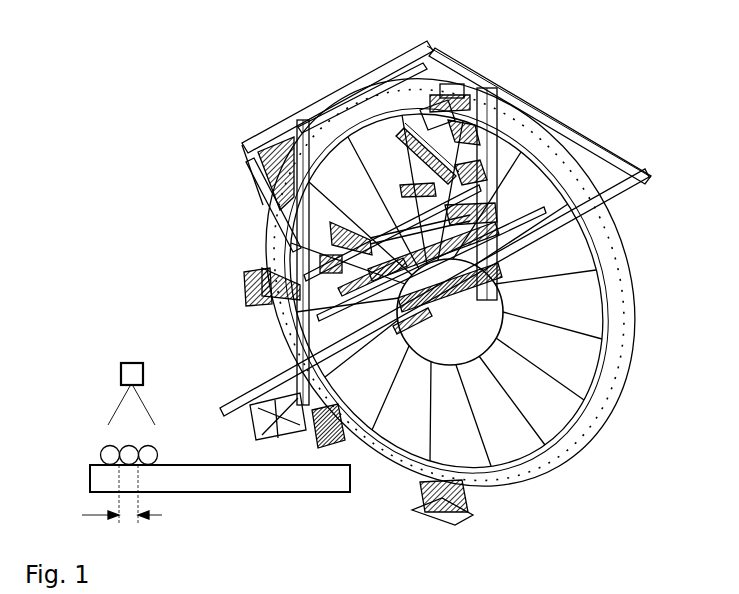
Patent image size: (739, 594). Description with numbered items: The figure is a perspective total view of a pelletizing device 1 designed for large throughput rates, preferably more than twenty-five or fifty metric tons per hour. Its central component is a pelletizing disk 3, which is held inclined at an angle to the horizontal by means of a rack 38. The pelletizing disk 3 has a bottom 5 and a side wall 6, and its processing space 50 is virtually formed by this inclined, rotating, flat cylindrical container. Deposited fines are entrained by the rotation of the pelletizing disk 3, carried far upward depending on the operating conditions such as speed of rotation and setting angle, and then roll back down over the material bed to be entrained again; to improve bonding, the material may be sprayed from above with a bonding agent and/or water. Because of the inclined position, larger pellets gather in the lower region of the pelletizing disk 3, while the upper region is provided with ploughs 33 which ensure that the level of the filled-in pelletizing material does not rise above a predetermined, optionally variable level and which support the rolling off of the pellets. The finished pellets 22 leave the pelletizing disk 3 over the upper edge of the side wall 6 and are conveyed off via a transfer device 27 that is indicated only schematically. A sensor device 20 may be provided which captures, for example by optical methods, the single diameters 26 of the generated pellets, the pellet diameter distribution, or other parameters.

The pelletizing device 1 is at (182, 100).
The pelletizing disk 3 is at (637, 368).
The bottom 5 is at (567, 310).
The side wall 6 is at (600, 398).
The sensor device 20 is at (129, 359).
The finished pellets 22 is at (103, 448).
The single diameters 26 is at (127, 525).
The transfer device 27 is at (93, 483).
The ploughs 33 is at (390, 140).
The rack 38 is at (252, 367).
The processing space 50 is at (542, 415).